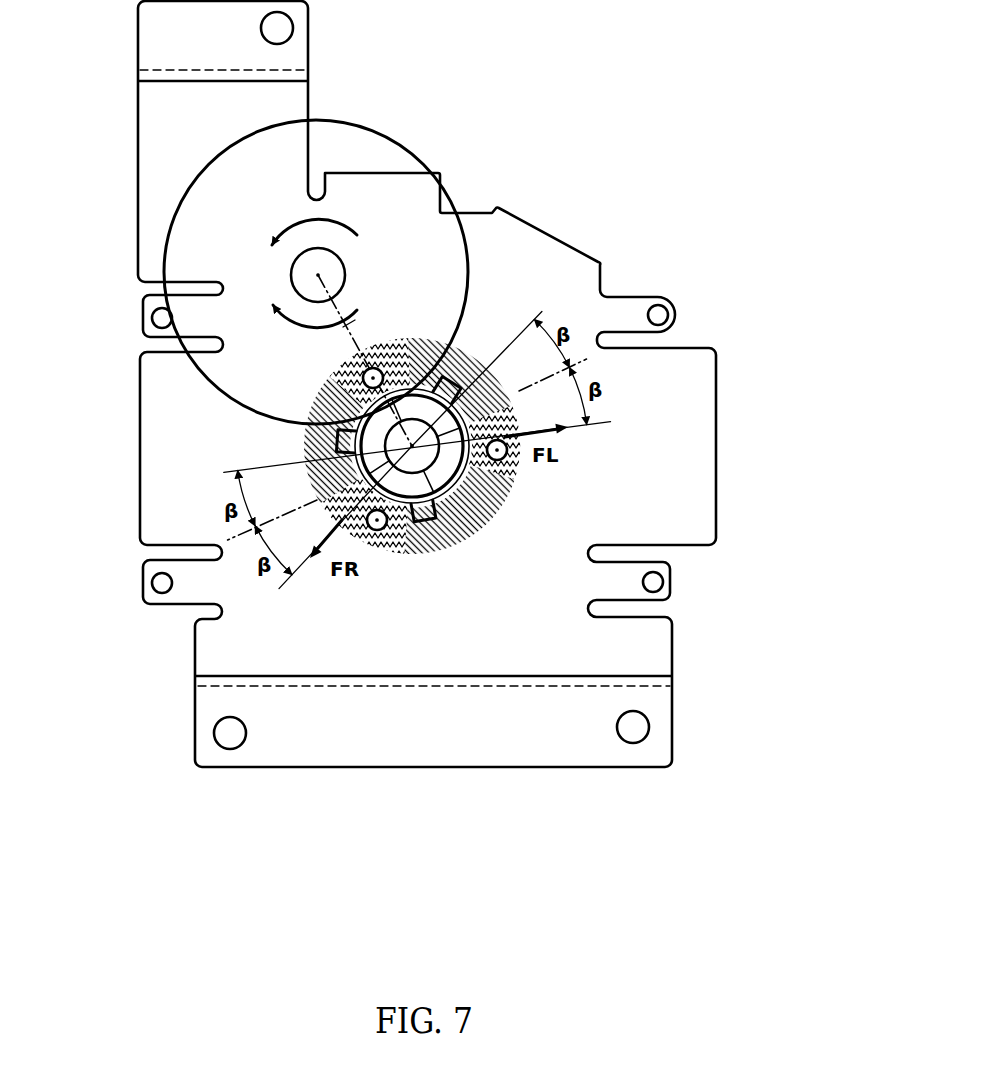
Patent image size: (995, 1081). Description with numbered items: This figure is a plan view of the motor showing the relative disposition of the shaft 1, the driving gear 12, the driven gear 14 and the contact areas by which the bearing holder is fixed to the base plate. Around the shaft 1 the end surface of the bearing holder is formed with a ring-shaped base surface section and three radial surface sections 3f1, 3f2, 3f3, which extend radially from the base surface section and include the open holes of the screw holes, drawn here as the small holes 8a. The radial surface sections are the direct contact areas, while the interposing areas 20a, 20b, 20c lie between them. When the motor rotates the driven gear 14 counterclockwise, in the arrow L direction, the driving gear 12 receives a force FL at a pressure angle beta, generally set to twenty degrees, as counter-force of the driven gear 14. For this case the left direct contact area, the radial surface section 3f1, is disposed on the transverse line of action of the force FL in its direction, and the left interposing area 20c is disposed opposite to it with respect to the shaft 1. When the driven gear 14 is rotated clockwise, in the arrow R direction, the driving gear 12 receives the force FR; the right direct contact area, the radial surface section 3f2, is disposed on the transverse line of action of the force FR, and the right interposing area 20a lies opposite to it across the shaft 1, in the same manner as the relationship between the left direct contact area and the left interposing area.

The shaft 1 is at (447, 516).
The driving gear 12 is at (403, 797).
The driven gear 14 is at (368, 128).
The positioning holes 8a is at (512, 462).
The radial surface section 3f3 is at (387, 347).
The radial surface section 3f1 is at (520, 473).
The radial surface section 3f2 is at (388, 560).
The interposing area 20a is at (473, 360).
The interposing area 20b is at (522, 528).
The interposing area 20c is at (303, 450).